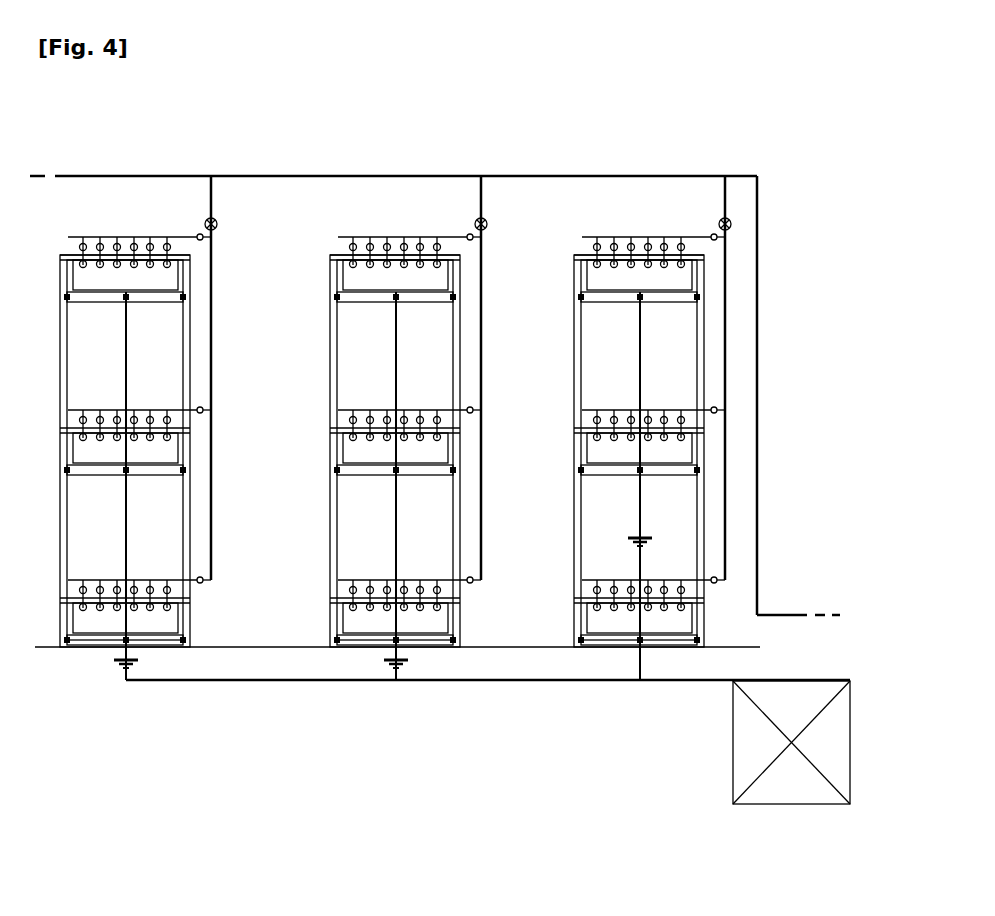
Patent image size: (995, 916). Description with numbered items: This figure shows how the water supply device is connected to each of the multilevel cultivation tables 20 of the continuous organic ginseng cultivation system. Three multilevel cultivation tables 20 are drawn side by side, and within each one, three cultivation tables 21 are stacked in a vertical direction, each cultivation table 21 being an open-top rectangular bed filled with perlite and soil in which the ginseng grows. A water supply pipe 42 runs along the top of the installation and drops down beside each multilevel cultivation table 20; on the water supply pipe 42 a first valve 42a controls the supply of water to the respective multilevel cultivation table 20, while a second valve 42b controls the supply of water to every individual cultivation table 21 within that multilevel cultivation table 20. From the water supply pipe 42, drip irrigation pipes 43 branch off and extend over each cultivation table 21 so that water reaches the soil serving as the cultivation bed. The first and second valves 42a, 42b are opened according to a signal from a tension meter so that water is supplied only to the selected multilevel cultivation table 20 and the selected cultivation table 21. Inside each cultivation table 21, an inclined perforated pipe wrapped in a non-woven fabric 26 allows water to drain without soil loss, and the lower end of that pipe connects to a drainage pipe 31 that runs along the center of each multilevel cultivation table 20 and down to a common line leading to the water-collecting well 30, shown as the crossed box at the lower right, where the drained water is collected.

The multilevel cultivation table 20 is at (328, 394).
The cultivation table 21 is at (597, 455).
The non-woven fabric 26 is at (600, 476).
The water-collecting well 30 is at (790, 805).
The drainage pipe 31 is at (395, 532).
The water supply pipe 42 is at (212, 307).
The first valve 42a is at (217, 223).
The second valve 42b is at (714, 235).
The drip irrigation pipe 43 is at (605, 238).